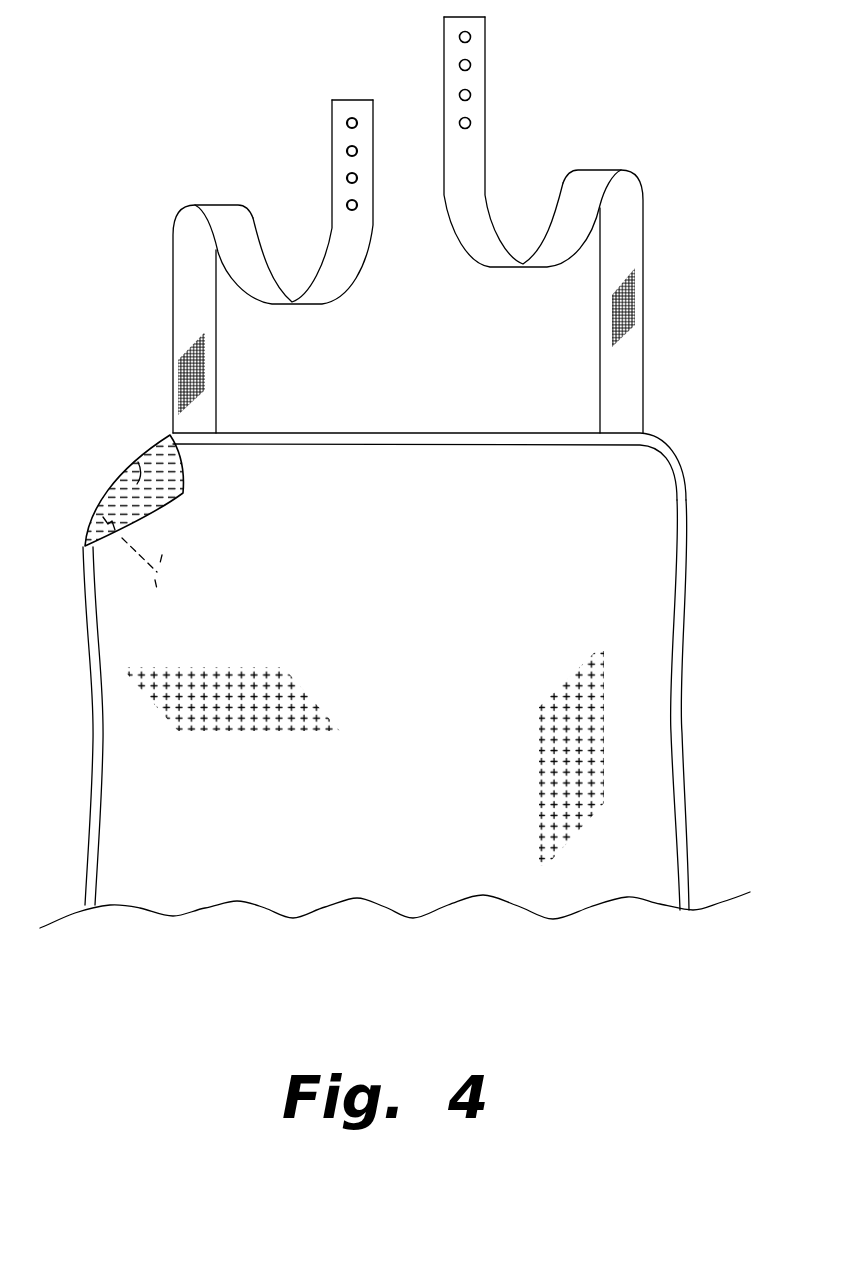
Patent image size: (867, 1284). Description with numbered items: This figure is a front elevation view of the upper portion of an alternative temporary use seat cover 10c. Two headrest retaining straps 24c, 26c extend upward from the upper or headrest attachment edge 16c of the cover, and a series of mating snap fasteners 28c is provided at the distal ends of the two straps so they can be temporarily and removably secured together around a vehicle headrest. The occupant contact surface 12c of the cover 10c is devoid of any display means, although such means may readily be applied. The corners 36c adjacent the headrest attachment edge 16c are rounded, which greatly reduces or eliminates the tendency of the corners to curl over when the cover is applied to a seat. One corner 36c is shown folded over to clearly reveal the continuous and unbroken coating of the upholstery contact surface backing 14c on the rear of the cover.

The seat cover 10c is at (402, 546).
The occupant contact surface 12c is at (412, 674).
The upholstery contact surface backing 14c is at (90, 447).
The headrest attachment edge 16c is at (403, 430).
The headrest retaining strap 24c is at (643, 312).
The headrest retaining strap 26c is at (173, 314).
The mating snap fasteners 28c is at (397, 52).
The rounded corner 36c is at (182, 497).